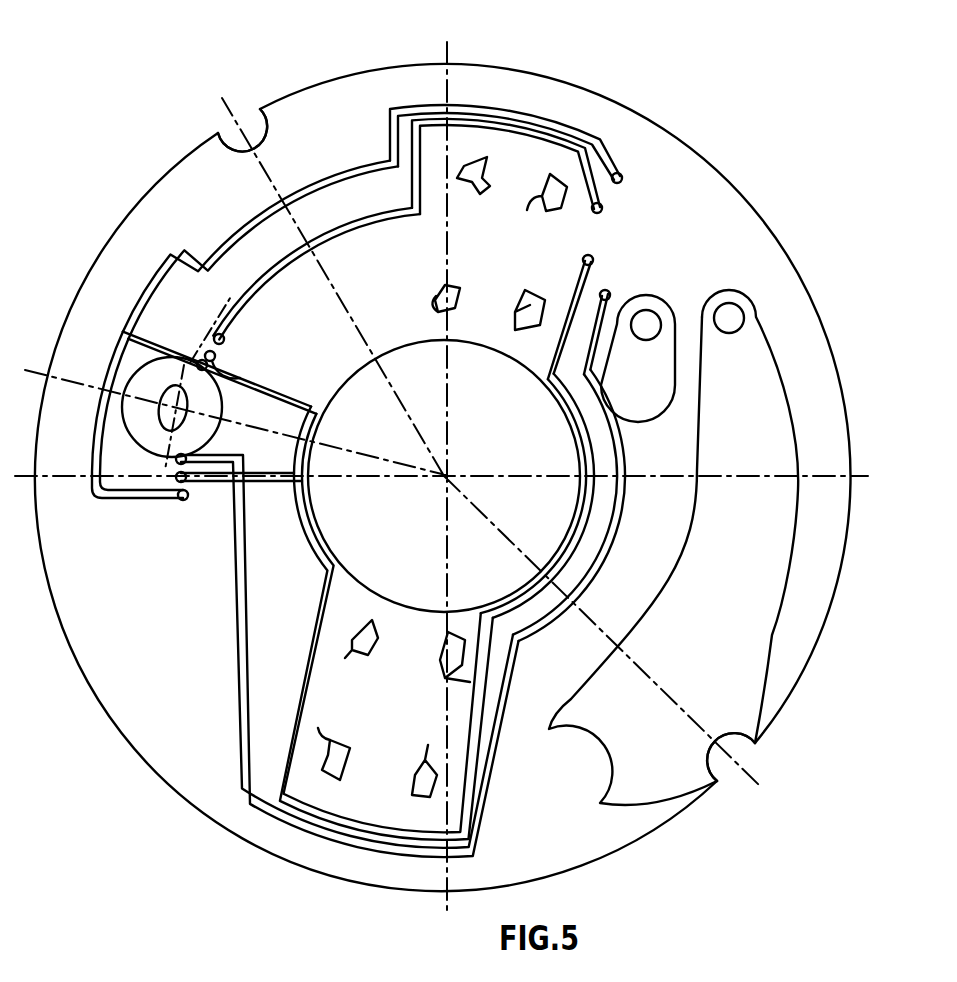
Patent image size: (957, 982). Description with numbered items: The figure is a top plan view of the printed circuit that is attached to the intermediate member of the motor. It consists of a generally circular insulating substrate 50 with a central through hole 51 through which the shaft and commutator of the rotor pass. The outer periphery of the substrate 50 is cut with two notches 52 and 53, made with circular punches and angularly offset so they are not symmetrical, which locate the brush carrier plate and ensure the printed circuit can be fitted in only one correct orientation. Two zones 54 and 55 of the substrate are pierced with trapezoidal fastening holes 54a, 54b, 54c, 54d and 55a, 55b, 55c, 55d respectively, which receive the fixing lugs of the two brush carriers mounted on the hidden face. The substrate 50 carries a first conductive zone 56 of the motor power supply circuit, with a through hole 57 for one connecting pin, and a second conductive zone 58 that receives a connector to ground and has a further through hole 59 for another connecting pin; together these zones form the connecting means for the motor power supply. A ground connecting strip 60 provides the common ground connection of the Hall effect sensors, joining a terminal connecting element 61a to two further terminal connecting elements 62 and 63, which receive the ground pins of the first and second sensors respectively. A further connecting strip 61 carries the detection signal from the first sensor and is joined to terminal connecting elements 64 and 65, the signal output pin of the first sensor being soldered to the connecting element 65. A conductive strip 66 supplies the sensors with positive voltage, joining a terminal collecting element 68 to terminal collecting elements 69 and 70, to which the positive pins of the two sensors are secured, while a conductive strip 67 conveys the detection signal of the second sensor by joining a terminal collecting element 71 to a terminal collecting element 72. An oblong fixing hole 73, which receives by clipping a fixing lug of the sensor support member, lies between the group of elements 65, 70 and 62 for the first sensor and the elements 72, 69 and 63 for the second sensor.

The insulating substrate 50 is at (314, 103).
The central through hole 51 is at (553, 390).
The notch 52 is at (215, 132).
The notch 53 is at (753, 750).
The zone 54 is at (378, 768).
The trapezoidal fastening hole 54a is at (354, 658).
The trapezoidal fastening hole 54b is at (347, 744).
The trapezoidal fastening hole 54c is at (422, 753).
The trapezoidal fastening hole 54d is at (432, 664).
The zone 55 is at (522, 168).
The trapezoidal fastening hole 55a is at (466, 275).
The trapezoidal fastening hole 55b is at (476, 197).
The trapezoidal fastening hole 55c is at (542, 213).
The trapezoidal fastening hole 55d is at (540, 295).
The first conductive zone 56 is at (757, 588).
The through hole 57 is at (738, 306).
The second conductive zone 58 is at (657, 398).
The through hole 59 is at (652, 318).
The connecting strip 60 is at (376, 158).
The connecting strip 61 is at (368, 224).
The terminal connecting element 61a is at (622, 174).
The terminal connecting element 62 is at (216, 357).
The terminal connecting element 63 is at (184, 500).
The terminal connecting element 64 is at (603, 209).
The terminal connecting element 65 is at (224, 338).
The conductive strip 66 is at (600, 507).
The conductive strip 67 is at (603, 555).
The terminal collecting element 68 is at (592, 262).
The terminal collecting element 69 is at (186, 481).
The terminal collecting element 70 is at (203, 360).
The terminal collecting element 71 is at (609, 292).
The terminal collecting element 72 is at (186, 455).
The oblong fixing hole 73 is at (145, 447).